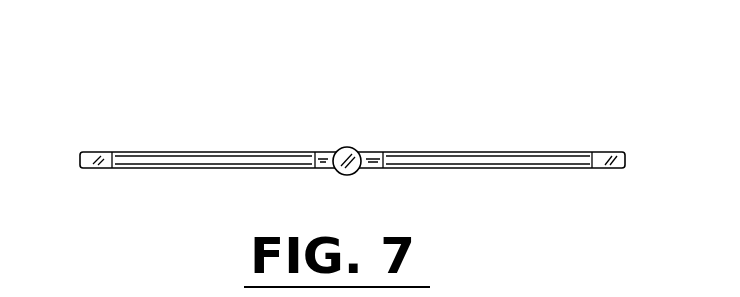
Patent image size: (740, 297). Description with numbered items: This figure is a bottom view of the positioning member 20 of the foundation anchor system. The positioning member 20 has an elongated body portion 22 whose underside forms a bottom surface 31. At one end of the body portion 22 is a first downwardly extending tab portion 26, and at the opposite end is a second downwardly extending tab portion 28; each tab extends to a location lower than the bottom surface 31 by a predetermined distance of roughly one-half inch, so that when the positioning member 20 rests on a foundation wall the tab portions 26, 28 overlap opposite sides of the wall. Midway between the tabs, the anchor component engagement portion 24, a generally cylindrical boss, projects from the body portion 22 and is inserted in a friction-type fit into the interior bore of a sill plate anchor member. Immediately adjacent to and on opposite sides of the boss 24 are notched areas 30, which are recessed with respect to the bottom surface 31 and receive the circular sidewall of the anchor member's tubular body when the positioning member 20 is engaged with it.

The positioning member 20 is at (160, 140).
The body portion 22 is at (520, 152).
The anchor component engagement portion 24 is at (348, 147).
The first downwardly extending tab portion 26 is at (87, 165).
The second downwardly extending tab portion 28 is at (624, 166).
The notched areas 30 is at (372, 164).
The bottom surface 31 is at (207, 165).